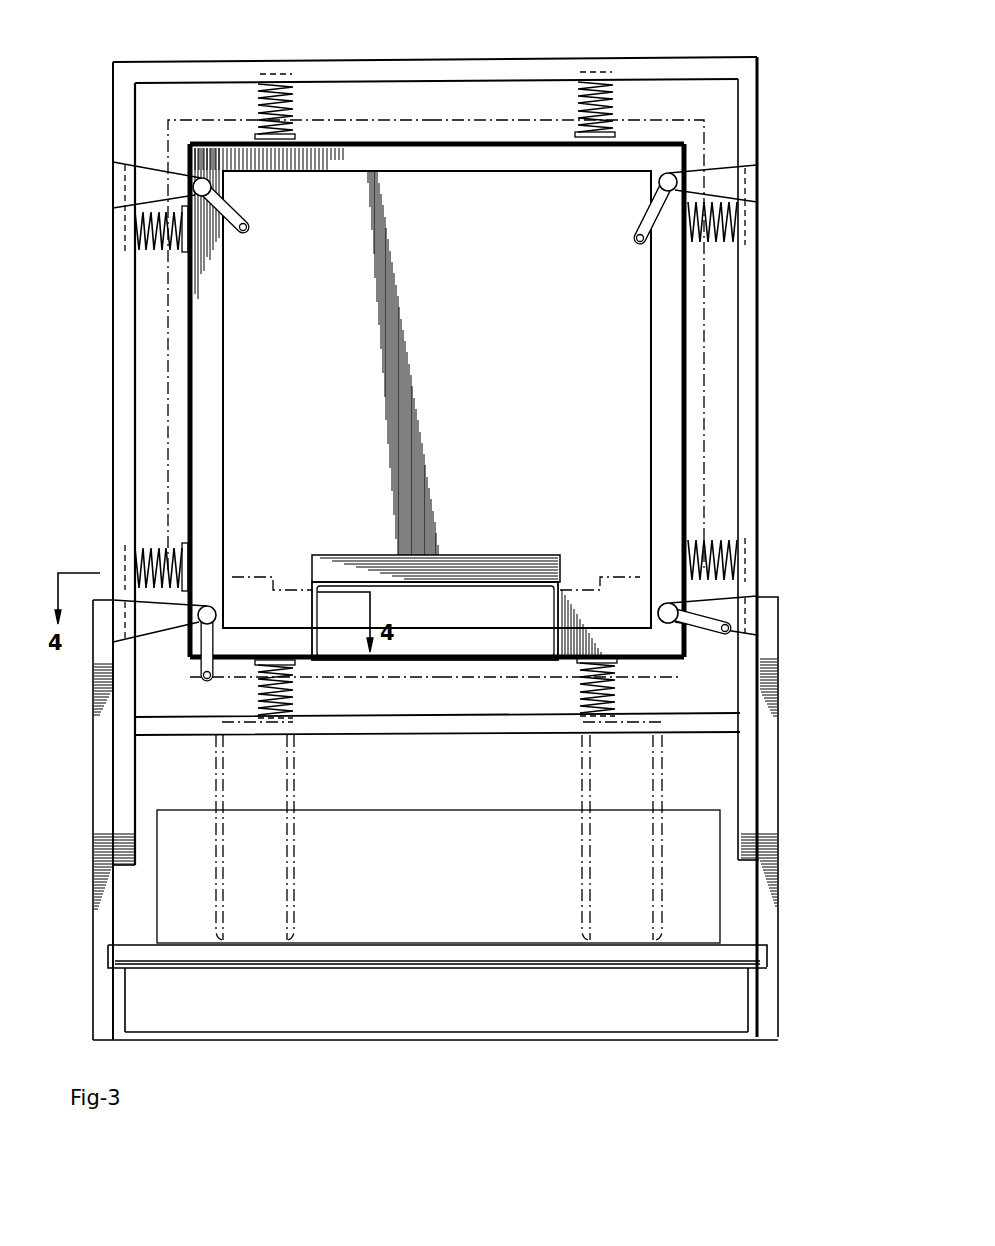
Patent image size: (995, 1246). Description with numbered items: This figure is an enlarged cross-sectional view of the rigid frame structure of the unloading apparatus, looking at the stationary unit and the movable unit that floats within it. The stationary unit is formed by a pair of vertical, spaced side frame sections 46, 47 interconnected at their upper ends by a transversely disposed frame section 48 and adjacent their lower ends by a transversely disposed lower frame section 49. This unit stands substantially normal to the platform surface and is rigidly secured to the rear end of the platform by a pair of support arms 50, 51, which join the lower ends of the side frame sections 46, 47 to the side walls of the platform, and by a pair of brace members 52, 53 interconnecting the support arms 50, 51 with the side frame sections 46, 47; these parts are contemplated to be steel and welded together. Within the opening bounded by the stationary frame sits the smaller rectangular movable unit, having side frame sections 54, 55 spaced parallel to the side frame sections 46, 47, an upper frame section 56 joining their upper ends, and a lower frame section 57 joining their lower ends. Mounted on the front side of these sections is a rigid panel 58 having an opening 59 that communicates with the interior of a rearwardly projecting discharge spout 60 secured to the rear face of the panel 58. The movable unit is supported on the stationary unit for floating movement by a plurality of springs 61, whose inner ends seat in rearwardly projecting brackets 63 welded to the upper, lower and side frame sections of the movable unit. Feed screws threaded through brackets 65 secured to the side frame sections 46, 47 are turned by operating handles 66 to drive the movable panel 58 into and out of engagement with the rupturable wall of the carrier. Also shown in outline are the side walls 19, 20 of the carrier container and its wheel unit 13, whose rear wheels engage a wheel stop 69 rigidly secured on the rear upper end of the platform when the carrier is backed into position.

The wheel unit 13 is at (292, 876).
The side wall 19 is at (168, 352).
The side wall 20 is at (700, 322).
The side frame section 46 is at (113, 455).
The side frame section 47 is at (750, 470).
The frame section 48 is at (490, 62).
The lower frame section 49 is at (488, 735).
The support arm 50 is at (100, 884).
The support arm 51 is at (775, 878).
The brace member 52 is at (100, 726).
The brace member 53 is at (775, 722).
The side frame section 54 is at (222, 393).
The side frame section 55 is at (655, 378).
The upper frame section 56 is at (466, 168).
The lower frame section 57 is at (605, 625).
The rigid panel 58 is at (472, 390).
The opening 59 is at (555, 590).
The discharge spout 60 is at (490, 555).
The spring 61 is at (300, 112).
The bracket 63 is at (285, 140).
The bracket 65 is at (145, 183).
The operating handle 66 is at (236, 215).
The wheel stop 69 is at (455, 810).